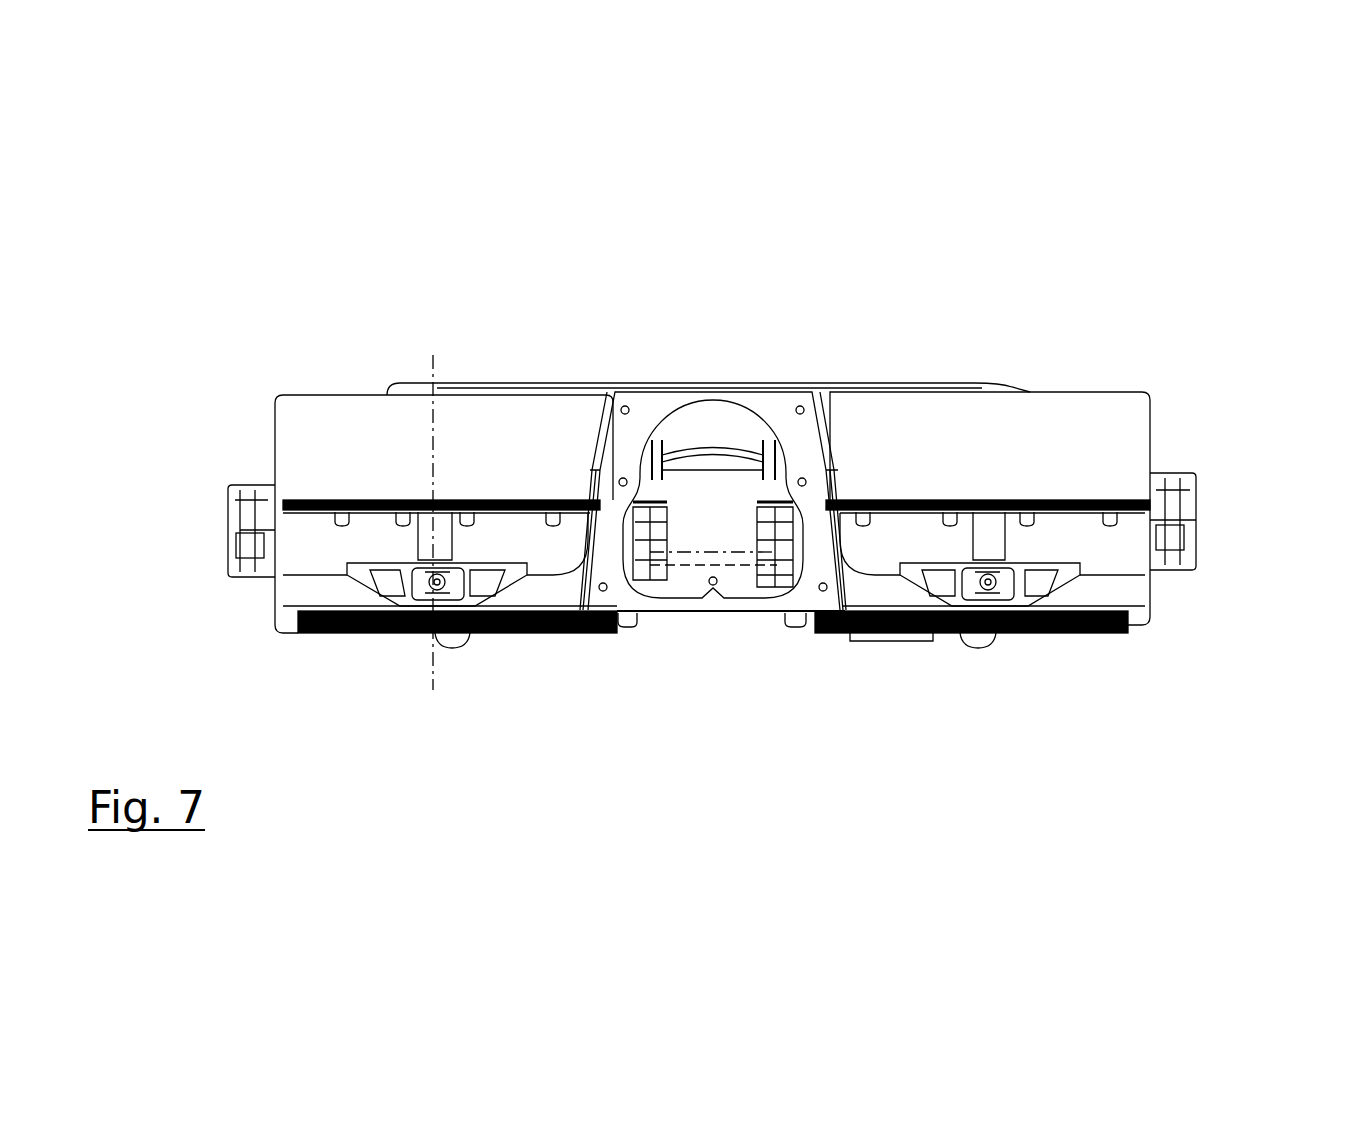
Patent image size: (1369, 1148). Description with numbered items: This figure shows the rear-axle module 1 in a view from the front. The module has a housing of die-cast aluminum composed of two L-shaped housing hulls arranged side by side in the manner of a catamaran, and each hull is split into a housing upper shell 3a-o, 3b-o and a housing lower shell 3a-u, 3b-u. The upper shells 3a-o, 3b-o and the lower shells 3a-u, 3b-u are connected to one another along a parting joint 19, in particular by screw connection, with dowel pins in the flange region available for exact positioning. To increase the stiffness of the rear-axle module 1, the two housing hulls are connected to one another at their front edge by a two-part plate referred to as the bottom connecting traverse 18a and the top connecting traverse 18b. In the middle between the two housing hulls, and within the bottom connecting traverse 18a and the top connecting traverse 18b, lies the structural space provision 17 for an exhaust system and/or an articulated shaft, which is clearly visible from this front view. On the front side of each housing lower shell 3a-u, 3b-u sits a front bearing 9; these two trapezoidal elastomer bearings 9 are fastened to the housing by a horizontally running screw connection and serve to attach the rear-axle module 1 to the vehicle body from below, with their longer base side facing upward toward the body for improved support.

The rear-axle module 1 is at (509, 201).
The housing upper shell 3a-o is at (358, 432).
The housing lower shell 3a-u is at (297, 556).
The housing upper shell 3b-o is at (1038, 450).
The housing lower shell 3b-u is at (1120, 557).
The front bearing 9 is at (475, 640).
The structural space provision 17 is at (718, 515).
The bottom connecting traverse 18a is at (563, 585).
The top connecting traverse 18b is at (805, 595).
The parting joint 19 is at (298, 495).